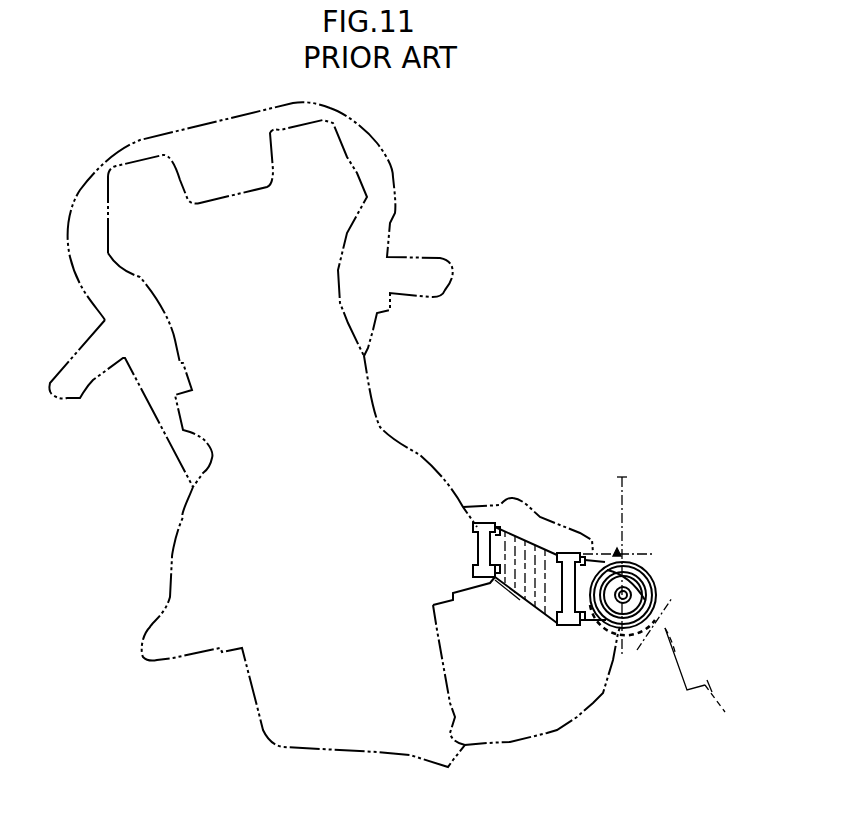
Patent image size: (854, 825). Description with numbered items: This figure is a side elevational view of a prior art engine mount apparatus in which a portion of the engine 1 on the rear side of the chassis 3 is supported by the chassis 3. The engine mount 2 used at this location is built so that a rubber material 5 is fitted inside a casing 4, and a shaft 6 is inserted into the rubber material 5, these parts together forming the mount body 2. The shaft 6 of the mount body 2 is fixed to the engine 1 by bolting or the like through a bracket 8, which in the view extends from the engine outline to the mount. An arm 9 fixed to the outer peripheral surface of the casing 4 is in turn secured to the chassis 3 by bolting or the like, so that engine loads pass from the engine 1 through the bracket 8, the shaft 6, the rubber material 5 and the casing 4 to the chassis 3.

The engine 1 is at (393, 220).
The engine mount 2 is at (598, 633).
The chassis 3 is at (706, 680).
The casing 4 is at (657, 570).
The rubber material 5 is at (653, 580).
The shaft 6 is at (624, 630).
The bracket 8 is at (560, 635).
The arm 9 is at (613, 550).